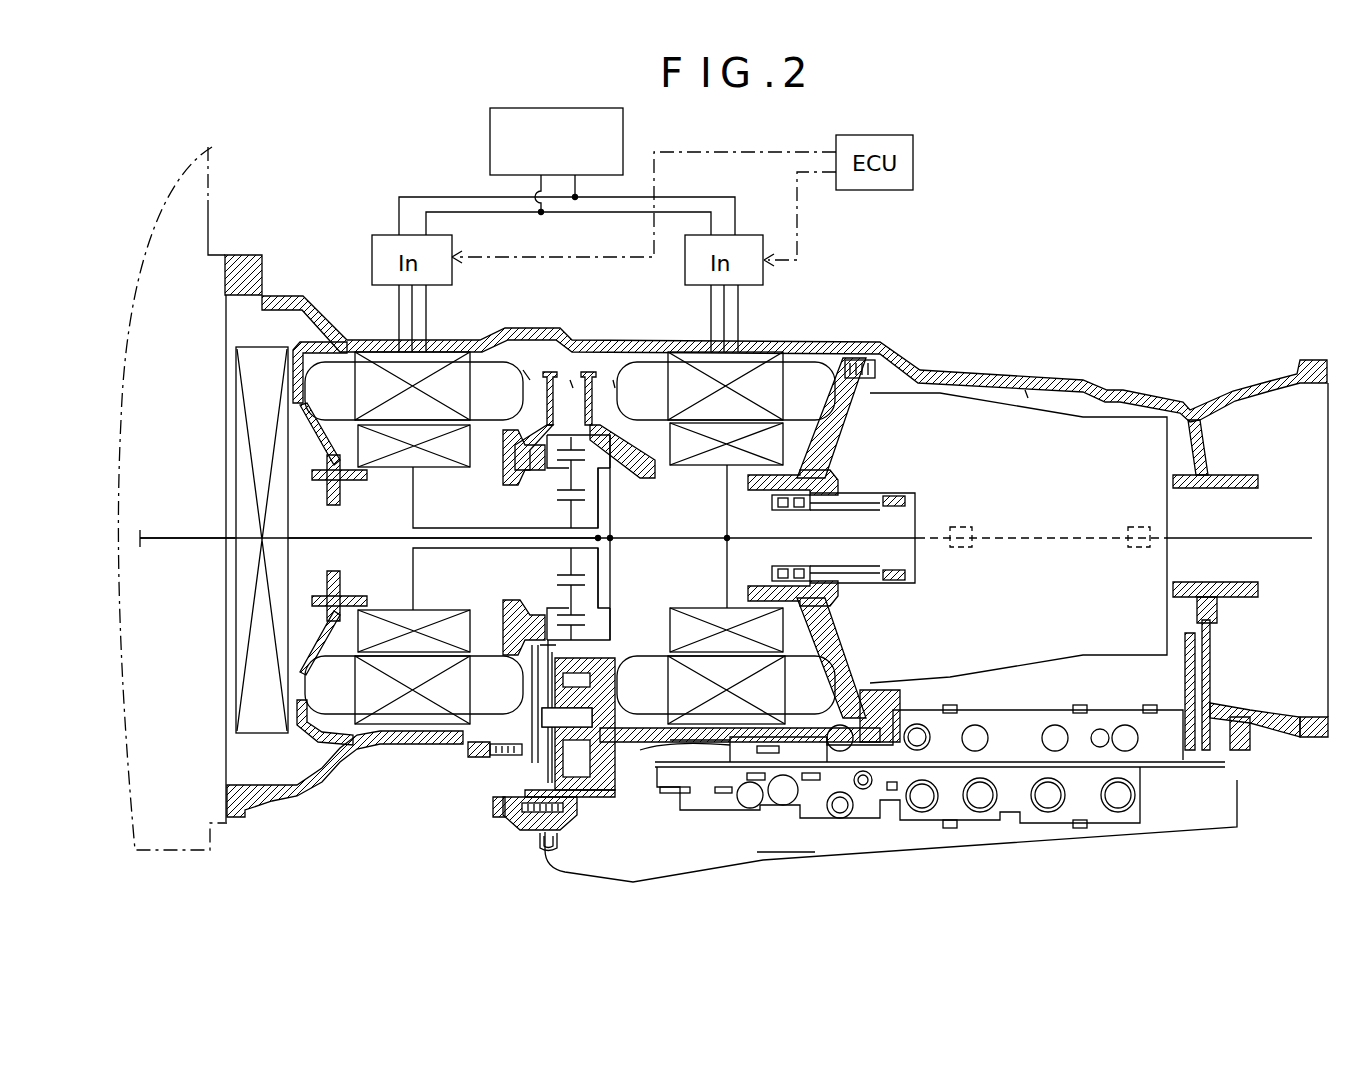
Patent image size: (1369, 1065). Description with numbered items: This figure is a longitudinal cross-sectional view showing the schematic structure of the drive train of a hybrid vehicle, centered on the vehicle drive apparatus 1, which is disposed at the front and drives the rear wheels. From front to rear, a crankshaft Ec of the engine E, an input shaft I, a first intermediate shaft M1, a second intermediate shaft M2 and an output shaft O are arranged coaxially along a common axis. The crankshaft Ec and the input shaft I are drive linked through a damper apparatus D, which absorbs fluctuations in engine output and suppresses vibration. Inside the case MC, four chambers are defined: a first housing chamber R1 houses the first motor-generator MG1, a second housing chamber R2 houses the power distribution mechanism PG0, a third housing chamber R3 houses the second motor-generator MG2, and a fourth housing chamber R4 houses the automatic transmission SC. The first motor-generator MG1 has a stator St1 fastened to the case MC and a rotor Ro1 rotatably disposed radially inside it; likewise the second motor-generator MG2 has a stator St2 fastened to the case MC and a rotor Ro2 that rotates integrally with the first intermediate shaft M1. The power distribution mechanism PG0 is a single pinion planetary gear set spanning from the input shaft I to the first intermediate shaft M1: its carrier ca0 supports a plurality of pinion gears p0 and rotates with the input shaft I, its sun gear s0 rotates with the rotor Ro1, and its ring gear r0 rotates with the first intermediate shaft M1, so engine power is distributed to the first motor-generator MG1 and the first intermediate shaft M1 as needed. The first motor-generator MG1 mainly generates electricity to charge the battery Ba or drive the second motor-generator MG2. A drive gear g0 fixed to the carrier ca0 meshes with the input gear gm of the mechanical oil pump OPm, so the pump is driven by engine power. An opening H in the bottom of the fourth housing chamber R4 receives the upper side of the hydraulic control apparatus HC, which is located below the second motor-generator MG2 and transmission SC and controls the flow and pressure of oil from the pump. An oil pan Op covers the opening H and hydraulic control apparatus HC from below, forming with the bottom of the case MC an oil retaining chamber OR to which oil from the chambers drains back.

The vehicle drive apparatus 1 is at (1008, 170).
The battery Ba is at (490, 146).
The engine E is at (212, 190).
The crankshaft Ec is at (190, 535).
The damper apparatus D is at (232, 606).
The input shaft I is at (384, 541).
The first motor-generator MG1 is at (378, 345).
The stator St1 is at (448, 355).
The rotor Ro1 is at (388, 470).
The first housing chamber R1 is at (530, 375).
The second housing chamber R2 is at (573, 385).
The third housing chamber R3 is at (615, 385).
The fourth housing chamber R4 is at (1028, 395).
The second motor-generator MG2 is at (762, 345).
The stator St2 is at (700, 355).
The rotor Ro2 is at (700, 470).
The power distribution mechanism PG0 is at (613, 595).
The sun gear s0 is at (603, 562).
The carrier ca0 is at (602, 490).
The pinion gears p0 is at (565, 480).
The ring gear r0 is at (578, 425).
The drive gear g0 is at (517, 623).
The input gear gm is at (530, 663).
The mechanical oil pump OPm is at (550, 773).
The case MC is at (930, 375).
The automatic transmission SC is at (1095, 415).
The first intermediate shaft M1 is at (885, 527).
The second intermediate shaft M2 is at (1062, 545).
The output shaft O is at (1268, 536).
The opening H is at (1187, 682).
The hydraulic control apparatus HC is at (705, 805).
The oil retaining chamber OR is at (786, 838).
The oil pan Op is at (1038, 842).